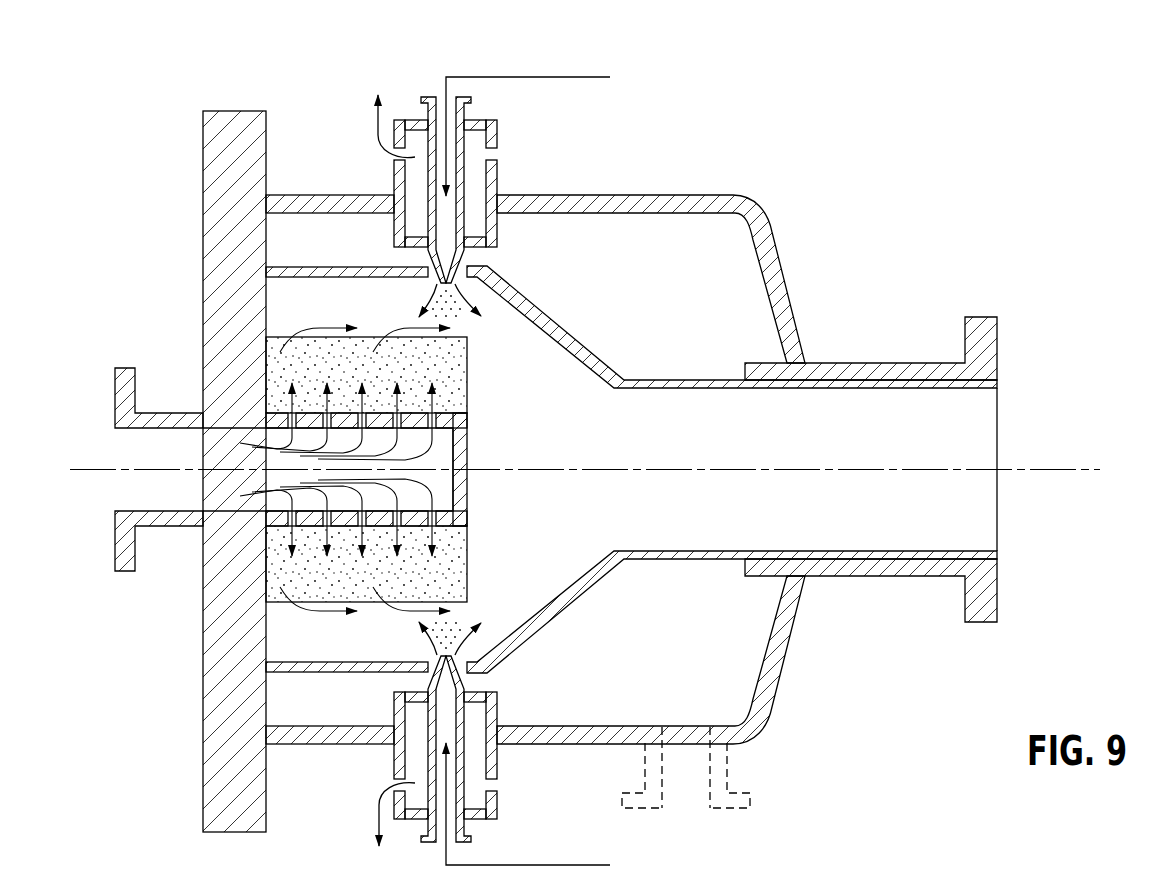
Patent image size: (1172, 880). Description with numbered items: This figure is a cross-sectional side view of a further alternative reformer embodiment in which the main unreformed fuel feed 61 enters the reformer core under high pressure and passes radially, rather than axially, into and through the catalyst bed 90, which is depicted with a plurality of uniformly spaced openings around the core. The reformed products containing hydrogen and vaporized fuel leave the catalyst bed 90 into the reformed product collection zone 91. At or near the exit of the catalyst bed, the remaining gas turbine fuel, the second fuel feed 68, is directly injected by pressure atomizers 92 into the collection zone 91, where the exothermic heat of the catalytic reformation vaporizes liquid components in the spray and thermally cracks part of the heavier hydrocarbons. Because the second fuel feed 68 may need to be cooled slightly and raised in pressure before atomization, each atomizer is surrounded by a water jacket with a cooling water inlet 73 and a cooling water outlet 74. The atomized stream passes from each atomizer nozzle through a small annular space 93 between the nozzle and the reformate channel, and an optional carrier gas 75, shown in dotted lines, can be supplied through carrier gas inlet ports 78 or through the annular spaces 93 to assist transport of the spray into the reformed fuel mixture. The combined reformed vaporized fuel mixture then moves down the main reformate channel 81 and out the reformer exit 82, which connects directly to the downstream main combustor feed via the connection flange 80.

The main unreformed fuel feed 61 is at (185, 488).
The second fuel feed 68 is at (528, 458).
The cooling water inlet 73 is at (472, 216).
The cooling water outlet 74 is at (376, 472).
The optional carrier gas 75 is at (687, 782).
The carrier gas inlet ports 78 is at (713, 378).
The connection flange 80 is at (985, 370).
The main reformate channel 81 is at (579, 458).
The reformer exit 82 is at (1021, 450).
The catalyst bed 90 is at (325, 591).
The reformed product collection zone 91 is at (501, 502).
The pressure atomizers 92 is at (441, 713).
The small annular space 93 is at (432, 274).